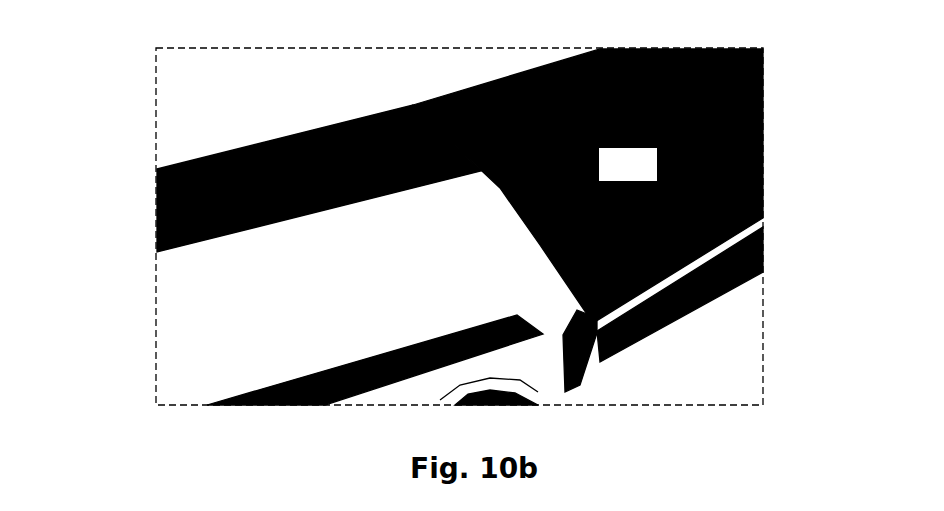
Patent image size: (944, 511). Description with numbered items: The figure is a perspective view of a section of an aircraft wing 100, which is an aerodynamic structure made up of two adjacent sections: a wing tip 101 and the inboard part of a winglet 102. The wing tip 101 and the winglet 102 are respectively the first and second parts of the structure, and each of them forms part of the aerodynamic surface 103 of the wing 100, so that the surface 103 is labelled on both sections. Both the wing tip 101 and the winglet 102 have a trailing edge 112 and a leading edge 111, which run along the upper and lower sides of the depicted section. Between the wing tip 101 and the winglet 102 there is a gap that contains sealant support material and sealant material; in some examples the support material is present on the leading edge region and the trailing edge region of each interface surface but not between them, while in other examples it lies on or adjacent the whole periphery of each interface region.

The aircraft wing 100 is at (273, 79).
The wing tip 101 is at (190, 307).
The winglet 102 is at (764, 133).
The aerodynamic surface 103 is at (644, 174).
The leading edge 111 is at (664, 340).
The trailing edge 112 is at (203, 143).